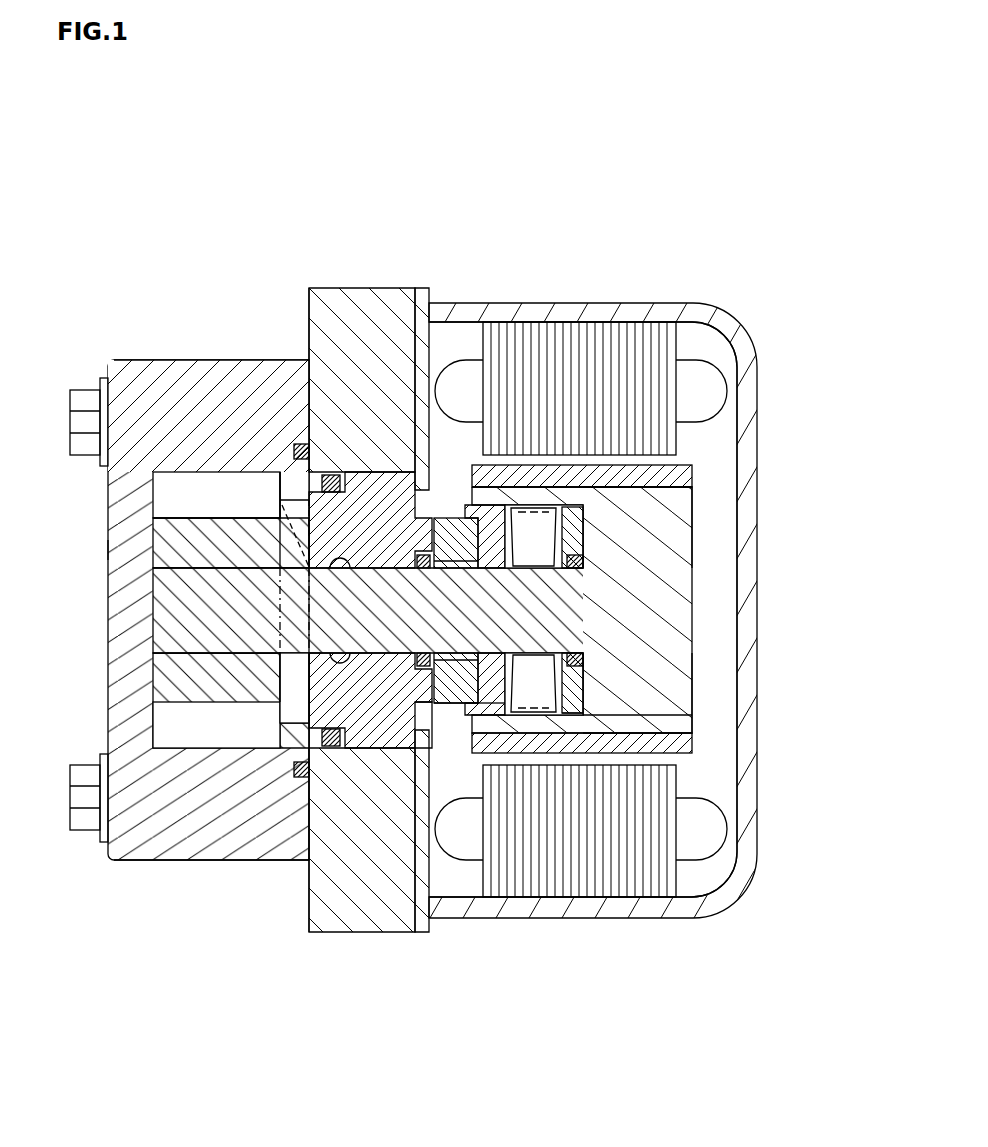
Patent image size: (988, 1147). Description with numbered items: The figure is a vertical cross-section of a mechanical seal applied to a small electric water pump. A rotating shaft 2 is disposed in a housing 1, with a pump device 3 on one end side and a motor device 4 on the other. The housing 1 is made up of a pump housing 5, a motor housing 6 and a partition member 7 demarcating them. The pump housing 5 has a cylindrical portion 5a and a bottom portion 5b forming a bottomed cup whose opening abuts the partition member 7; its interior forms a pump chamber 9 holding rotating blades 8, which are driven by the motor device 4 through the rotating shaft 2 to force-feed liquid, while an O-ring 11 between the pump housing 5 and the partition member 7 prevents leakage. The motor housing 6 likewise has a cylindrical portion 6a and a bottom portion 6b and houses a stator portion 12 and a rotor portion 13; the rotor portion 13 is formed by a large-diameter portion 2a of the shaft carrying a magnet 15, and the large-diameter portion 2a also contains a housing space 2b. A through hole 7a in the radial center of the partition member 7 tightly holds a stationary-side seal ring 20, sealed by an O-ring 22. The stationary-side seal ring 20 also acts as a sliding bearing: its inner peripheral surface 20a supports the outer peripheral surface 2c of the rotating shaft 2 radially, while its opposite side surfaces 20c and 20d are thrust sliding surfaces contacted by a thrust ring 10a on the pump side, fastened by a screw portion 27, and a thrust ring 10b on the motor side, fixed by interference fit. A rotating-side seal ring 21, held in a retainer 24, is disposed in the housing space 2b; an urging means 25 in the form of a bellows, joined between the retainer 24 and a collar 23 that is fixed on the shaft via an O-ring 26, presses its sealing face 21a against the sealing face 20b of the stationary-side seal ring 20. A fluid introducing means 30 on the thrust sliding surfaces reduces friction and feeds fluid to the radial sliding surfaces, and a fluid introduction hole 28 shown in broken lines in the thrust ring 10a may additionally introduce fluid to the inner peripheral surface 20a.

The housing 1 is at (308, 252).
The rotating shaft 2 is at (167, 597).
The large-diameter portion 2a is at (678, 521).
The housing space 2b is at (596, 547).
The outer peripheral surface 2c is at (332, 565).
The pump device 3 is at (181, 502).
The motor device 4 is at (722, 306).
The pump housing 5 is at (135, 360).
The cylindrical portion 5a is at (192, 378).
The bottom portion 5b is at (115, 550).
The motor housing 6 is at (652, 305).
The cylindrical portion 6a is at (588, 305).
The bottom portion 6b is at (748, 388).
The partition member 7 is at (357, 470).
The through hole 7a is at (352, 306).
The rotating blades 8 is at (160, 672).
The pump chamber 9 is at (165, 733).
The thrust ring 10a is at (283, 472).
The thrust ring 10b is at (420, 655).
The O-ring 11 is at (298, 778).
The stator portion 12 is at (605, 345).
The rotor portion 13 is at (714, 486).
The magnet 15 is at (686, 470).
The stationary-side seal ring 20 is at (372, 480).
The inner peripheral surface 20a is at (450, 705).
The sealing face 20b is at (487, 715).
The side surface 20c is at (285, 503).
The side surface 20d is at (418, 572).
The rotating-side seal ring 21 is at (462, 503).
The sealing face 21a is at (548, 708).
The O-ring 22 is at (335, 750).
The collar 23 is at (556, 700).
The retainer 24 is at (572, 668).
The urging means 25 is at (625, 712).
The O-ring 26 is at (582, 658).
The screw portion 27 is at (295, 633).
The fluid introduction hole 28 is at (283, 537).
The fluid introducing means 30 is at (190, 805).